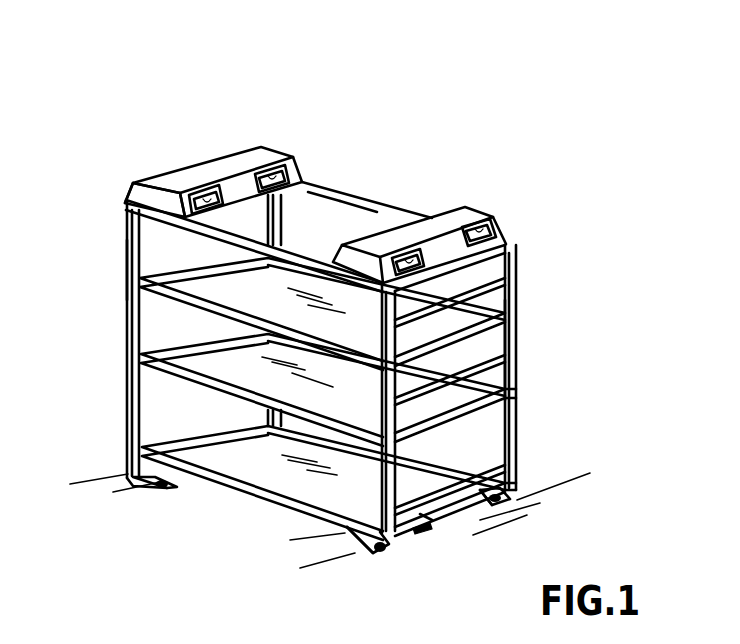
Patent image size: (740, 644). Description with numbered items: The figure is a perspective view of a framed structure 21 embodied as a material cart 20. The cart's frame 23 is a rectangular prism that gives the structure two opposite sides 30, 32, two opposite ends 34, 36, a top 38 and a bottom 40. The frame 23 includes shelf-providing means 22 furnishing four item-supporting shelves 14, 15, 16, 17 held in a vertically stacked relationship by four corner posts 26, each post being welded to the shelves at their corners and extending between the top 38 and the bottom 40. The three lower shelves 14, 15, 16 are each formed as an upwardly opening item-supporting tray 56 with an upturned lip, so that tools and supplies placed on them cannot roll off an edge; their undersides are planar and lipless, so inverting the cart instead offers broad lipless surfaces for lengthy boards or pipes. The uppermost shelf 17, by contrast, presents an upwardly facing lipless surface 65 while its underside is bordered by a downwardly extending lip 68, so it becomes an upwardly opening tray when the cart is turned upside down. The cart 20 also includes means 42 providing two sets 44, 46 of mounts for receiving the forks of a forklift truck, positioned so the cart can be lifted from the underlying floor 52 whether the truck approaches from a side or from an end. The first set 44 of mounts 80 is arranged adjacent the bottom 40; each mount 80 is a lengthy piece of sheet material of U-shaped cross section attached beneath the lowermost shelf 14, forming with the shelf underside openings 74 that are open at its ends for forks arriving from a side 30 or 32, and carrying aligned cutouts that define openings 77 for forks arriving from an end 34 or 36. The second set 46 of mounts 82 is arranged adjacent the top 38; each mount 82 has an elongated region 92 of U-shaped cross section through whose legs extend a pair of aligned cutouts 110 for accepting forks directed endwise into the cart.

The lowermost shelf 14 is at (458, 473).
The shelf 15 is at (460, 377).
The shelf 16 is at (467, 300).
The uppermost shelf 17 is at (392, 210).
The material cart 20 is at (580, 232).
The framed structure 21 is at (552, 130).
The shelf-providing means 22 is at (110, 307).
The frame 23 is at (640, 316).
The corner posts 26 is at (513, 306).
The side of cart 30 is at (200, 486).
The side of cart 32 is at (512, 392).
The end of cart 34 is at (128, 256).
The end of cart 36 is at (515, 470).
The top of cart 38 is at (317, 195).
The bottom of cart 40 is at (317, 517).
The means for providing forklift-accepting mounts 42 is at (190, 100).
The first set of forklift-accepting mounts 44 is at (97, 448).
The second set of forklift-accepting mounts 46 is at (130, 183).
The underlying floor 52 is at (458, 533).
The item-supporting tray 56 is at (251, 298).
The lipless surface 65 is at (350, 190).
The downwardly-extending lip 68 is at (210, 243).
The openings 74 is at (350, 552).
The openings 77 is at (473, 513).
The mounts 80 is at (127, 467).
The mounts 82 is at (177, 177).
The elongated region of U-shaped cross section 92 is at (168, 183).
The aligned cutouts 110 is at (285, 160).